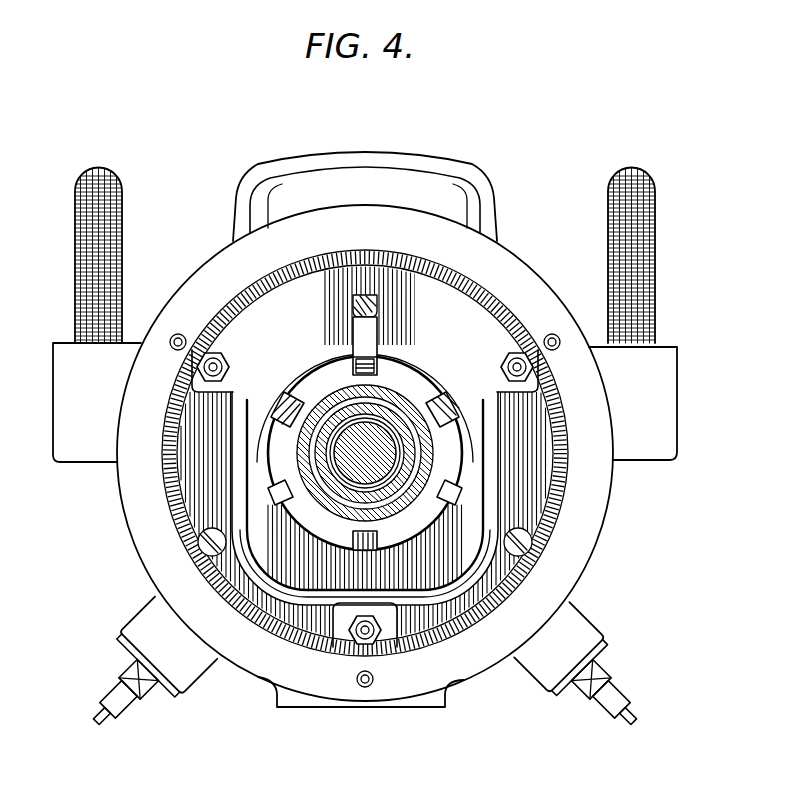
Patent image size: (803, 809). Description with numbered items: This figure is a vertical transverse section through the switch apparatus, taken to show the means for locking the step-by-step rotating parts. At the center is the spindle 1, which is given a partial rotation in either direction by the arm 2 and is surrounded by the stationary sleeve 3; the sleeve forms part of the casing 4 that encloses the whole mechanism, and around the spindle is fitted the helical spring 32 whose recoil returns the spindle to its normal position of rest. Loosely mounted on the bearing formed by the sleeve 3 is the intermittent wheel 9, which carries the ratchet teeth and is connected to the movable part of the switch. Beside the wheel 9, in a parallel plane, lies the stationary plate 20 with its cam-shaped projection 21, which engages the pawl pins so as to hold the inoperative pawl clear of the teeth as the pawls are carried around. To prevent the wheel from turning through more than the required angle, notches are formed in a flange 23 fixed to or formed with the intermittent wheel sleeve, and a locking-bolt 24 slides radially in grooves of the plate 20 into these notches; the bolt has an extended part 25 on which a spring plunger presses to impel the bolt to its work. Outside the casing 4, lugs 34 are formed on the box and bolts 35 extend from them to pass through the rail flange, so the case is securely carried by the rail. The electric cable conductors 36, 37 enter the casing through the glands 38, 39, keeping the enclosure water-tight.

The spindle 1 is at (380, 440).
The arm 2 is at (383, 163).
The stationary sleeve 3 is at (430, 410).
The casing 4 is at (590, 544).
The intermittent wheel 9 is at (318, 402).
The stationary plate 20 is at (274, 300).
The cam-shaped projection 21 is at (293, 562).
The notched flange 23 is at (279, 425).
The locking-bolt 24 is at (368, 329).
The extended part 25 is at (374, 305).
The helical spring 32 is at (372, 420).
The lugs 34 is at (78, 458).
The bolts 35 is at (125, 296).
The electric cable conductor 36 is at (104, 712).
The electric cable conductor 37 is at (620, 725).
The gland 38 is at (594, 636).
The gland 39 is at (183, 684).